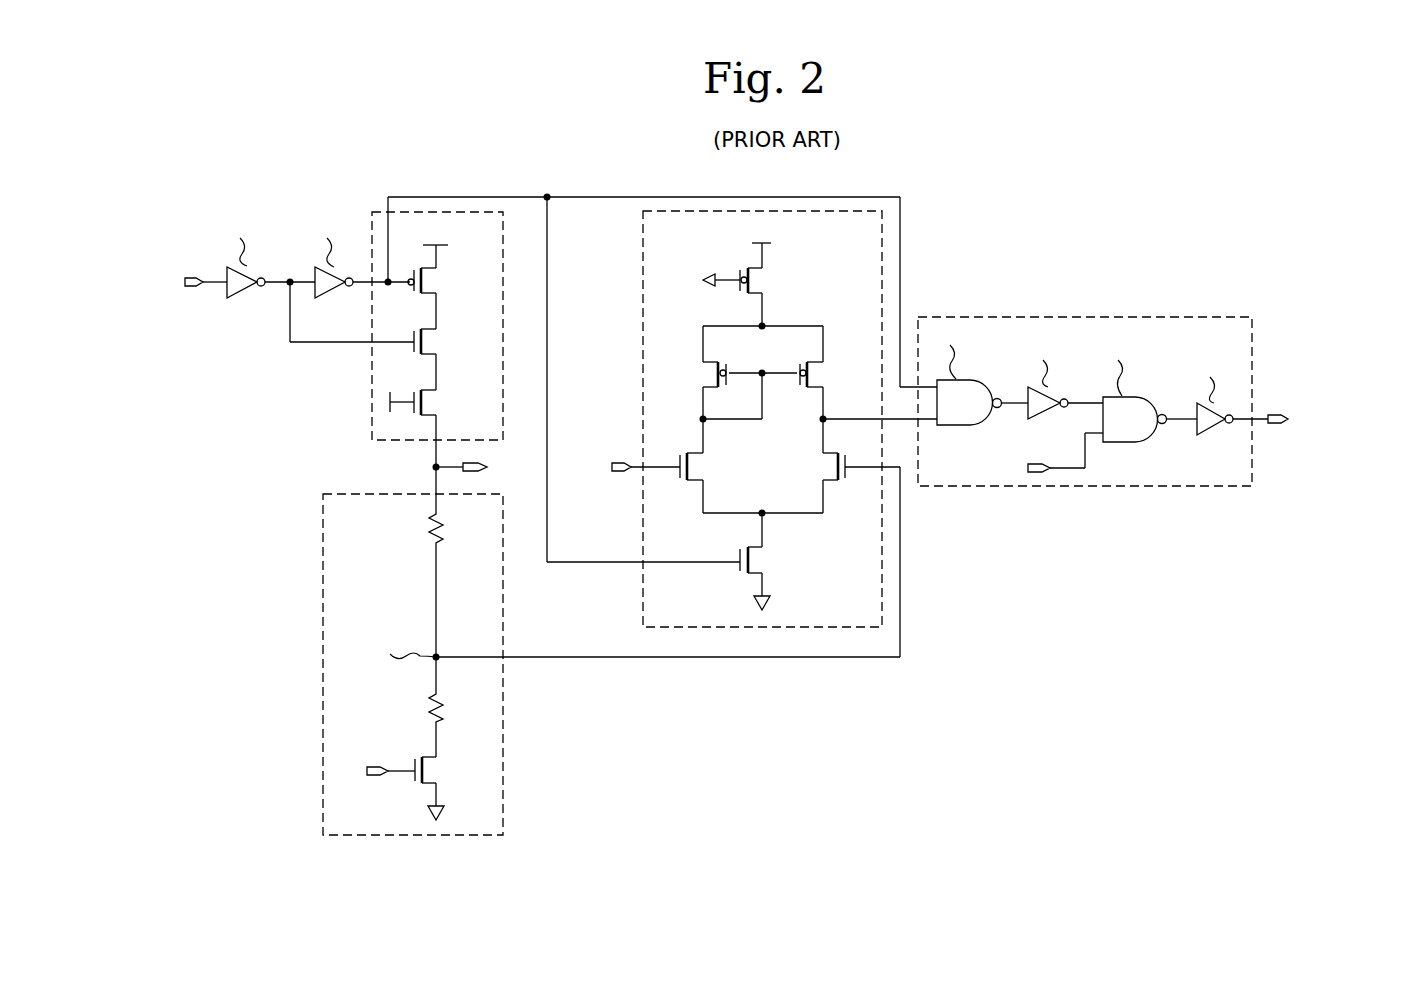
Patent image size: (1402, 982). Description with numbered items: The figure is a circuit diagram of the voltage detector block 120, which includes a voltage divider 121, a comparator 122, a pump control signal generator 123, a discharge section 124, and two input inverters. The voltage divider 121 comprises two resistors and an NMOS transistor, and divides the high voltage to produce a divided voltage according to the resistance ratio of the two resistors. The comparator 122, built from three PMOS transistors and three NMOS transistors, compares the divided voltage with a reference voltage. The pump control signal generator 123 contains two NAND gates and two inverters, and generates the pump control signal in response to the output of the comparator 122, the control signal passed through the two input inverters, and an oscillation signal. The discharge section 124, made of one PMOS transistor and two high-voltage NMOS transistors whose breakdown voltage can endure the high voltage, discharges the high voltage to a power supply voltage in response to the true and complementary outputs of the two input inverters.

The voltage detector block 120 is at (284, 151).
The voltage divider 121 is at (323, 670).
The comparator 122 is at (643, 302).
The pump control signal generator 123 is at (1173, 316).
The discharge section 124 is at (372, 387).